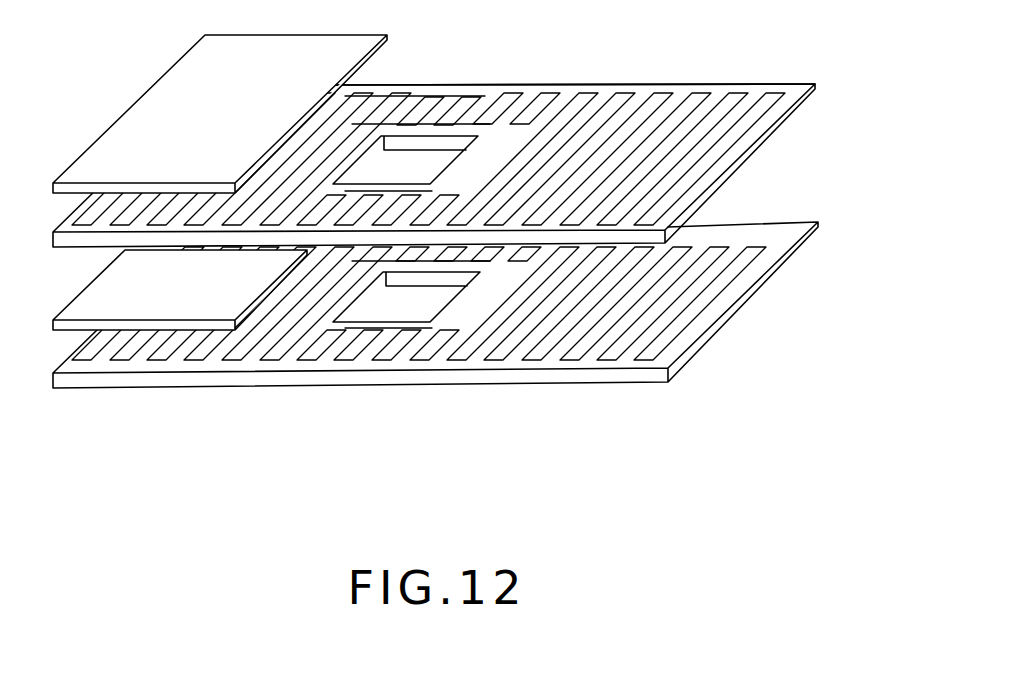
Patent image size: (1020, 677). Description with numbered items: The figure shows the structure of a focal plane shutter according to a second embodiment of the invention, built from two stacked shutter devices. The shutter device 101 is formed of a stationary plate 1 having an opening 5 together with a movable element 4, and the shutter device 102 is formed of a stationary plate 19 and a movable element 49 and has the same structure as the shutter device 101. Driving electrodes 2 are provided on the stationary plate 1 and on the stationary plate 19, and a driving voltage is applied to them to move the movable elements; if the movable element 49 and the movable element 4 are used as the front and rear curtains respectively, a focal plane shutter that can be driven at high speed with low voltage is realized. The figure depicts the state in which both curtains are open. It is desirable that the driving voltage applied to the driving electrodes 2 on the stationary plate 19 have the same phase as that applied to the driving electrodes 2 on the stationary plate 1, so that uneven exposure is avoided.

The stationary plate 1 is at (548, 380).
The driving electrodes 2 is at (771, 98).
The movable element 4 is at (96, 277).
The opening 5 is at (428, 155).
The stationary plate 19 is at (662, 85).
The movable element 49 is at (137, 102).
The shutter device 101 is at (481, 127).
The shutter device 102 is at (482, 338).